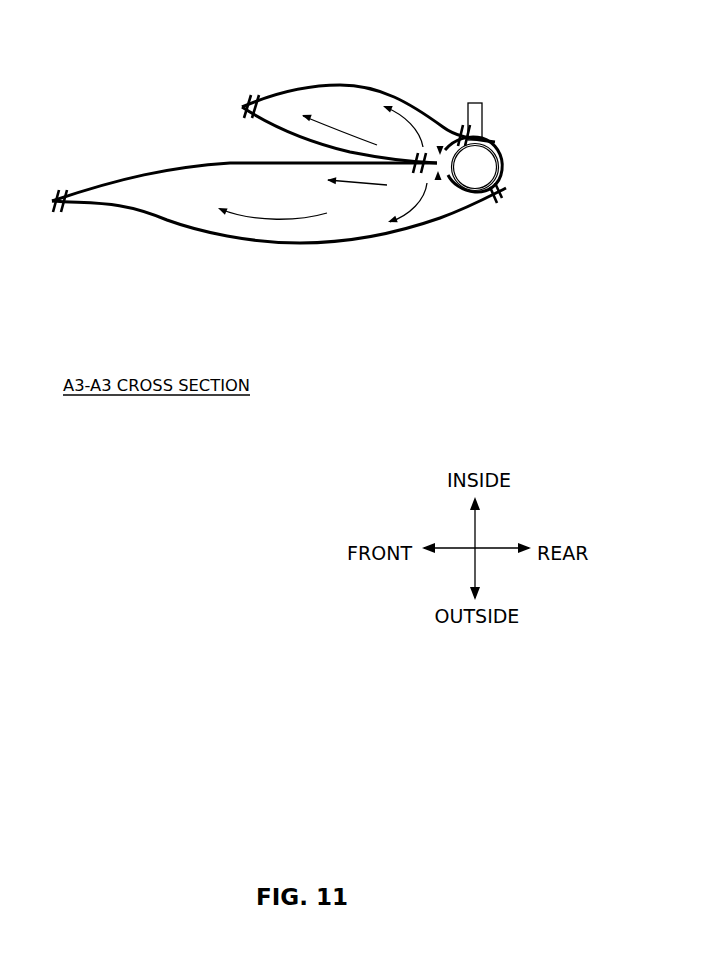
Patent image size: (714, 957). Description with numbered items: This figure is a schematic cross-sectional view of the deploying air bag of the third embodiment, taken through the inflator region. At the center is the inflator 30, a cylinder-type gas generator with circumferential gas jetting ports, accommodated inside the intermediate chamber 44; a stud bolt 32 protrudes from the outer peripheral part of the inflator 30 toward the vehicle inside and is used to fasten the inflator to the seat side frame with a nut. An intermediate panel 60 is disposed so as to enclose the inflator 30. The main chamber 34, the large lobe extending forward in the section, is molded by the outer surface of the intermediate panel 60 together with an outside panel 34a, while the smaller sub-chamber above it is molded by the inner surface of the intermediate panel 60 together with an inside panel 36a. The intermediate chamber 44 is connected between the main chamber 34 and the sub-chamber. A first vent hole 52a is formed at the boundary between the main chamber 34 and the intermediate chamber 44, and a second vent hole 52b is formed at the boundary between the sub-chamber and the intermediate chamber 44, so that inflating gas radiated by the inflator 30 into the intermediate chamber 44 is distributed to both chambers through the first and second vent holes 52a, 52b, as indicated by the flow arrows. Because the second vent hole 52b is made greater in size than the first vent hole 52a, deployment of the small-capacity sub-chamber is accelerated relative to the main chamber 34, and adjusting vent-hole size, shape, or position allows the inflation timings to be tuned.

The inflator 30 is at (489, 166).
The stud bolt 32 is at (481, 117).
The main chamber 34 is at (279, 251).
The outside panel 34a is at (233, 238).
The inside panel 36a is at (348, 85).
The intermediate chamber 44 is at (452, 186).
The first vent hole 52a is at (438, 172).
The second vent hole 52b is at (440, 154).
The intermediate panel 60 is at (177, 167).